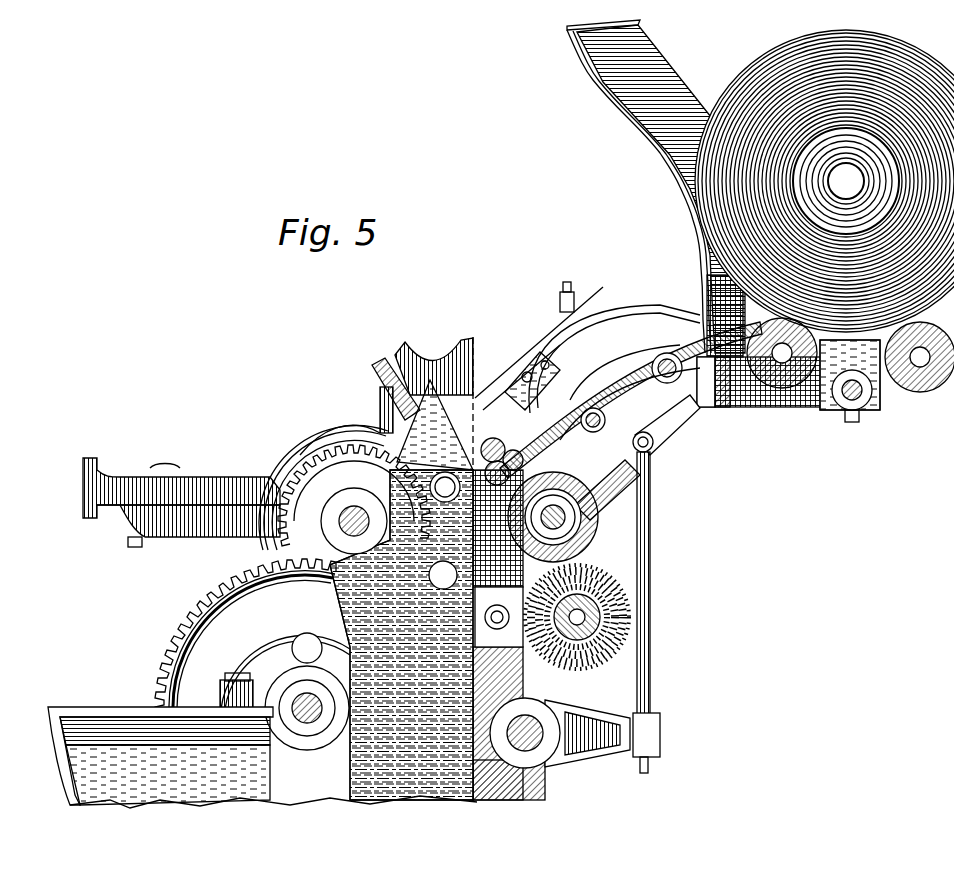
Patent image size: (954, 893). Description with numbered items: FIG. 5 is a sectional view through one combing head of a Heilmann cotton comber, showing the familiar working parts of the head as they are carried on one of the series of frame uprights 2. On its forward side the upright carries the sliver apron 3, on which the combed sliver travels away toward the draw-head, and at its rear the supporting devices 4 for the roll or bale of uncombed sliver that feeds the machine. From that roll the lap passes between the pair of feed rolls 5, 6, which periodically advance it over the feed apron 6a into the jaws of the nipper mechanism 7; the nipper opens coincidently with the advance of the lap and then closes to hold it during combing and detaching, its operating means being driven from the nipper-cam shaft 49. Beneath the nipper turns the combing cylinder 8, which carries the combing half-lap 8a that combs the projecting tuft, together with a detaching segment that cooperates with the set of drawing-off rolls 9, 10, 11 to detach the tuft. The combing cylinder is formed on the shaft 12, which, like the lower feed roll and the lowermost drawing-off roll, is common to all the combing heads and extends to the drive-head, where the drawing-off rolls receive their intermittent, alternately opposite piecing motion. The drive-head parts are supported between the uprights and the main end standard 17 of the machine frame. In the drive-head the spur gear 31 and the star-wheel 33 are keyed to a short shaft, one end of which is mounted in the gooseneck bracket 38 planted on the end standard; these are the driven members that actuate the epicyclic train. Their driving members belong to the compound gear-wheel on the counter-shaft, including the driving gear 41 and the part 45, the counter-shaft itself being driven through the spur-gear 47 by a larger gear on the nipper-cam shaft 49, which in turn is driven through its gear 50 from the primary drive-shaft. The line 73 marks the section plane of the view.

The frame upright 2 is at (140, 533).
The sliver apron 3 is at (115, 477).
The supporting devices 4 is at (722, 407).
The feed roll 5 is at (538, 385).
The feed roll 6 is at (585, 405).
The feed apron 6a is at (620, 355).
The nipper mechanism 7 is at (648, 448).
The combing cylinder 8 is at (594, 502).
The combing half-lap 8a is at (590, 545).
The drawing-off roll 9 is at (508, 455).
The drawing-off roll 10 is at (505, 478).
The drawing-off roll 11 is at (478, 452).
The combing cylinder shaft 12 is at (576, 517).
The main end standard 17 is at (80, 707).
The spur gear 31 is at (403, 387).
The star-wheel 33 is at (413, 357).
The gooseneck bracket 38 is at (417, 423).
The driving gear 41 is at (300, 458).
The compound gear-wheel part 45 is at (342, 450).
The spur-gear 47 is at (285, 470).
The nipper-cam shaft 49 is at (317, 703).
The gear 50 is at (252, 636).
The center line 73 is at (474, 390).